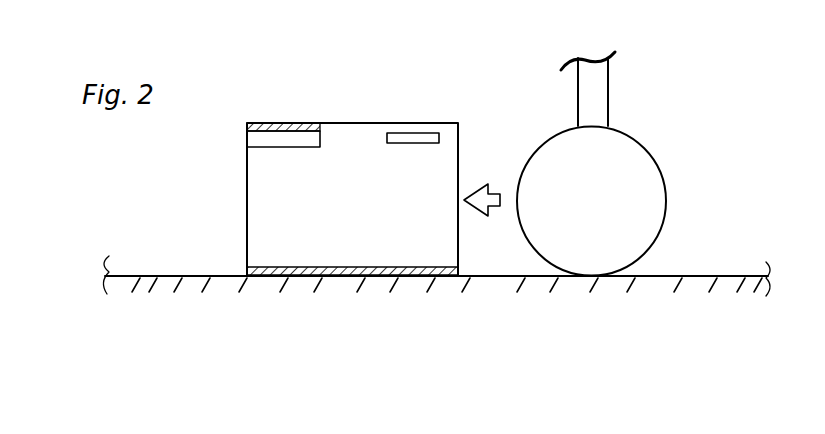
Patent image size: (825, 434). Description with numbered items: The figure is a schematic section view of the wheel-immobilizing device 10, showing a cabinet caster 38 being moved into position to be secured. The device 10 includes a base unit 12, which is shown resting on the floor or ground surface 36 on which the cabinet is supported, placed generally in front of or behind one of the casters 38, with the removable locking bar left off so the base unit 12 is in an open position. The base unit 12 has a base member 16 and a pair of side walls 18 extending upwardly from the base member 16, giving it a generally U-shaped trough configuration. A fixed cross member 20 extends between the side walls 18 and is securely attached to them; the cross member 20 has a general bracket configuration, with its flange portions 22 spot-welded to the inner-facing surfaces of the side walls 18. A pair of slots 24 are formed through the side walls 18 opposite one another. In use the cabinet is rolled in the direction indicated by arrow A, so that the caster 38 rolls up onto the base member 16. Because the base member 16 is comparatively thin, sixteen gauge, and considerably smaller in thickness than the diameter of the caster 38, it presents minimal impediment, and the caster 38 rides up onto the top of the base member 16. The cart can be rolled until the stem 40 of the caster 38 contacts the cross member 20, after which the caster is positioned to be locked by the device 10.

The wheel-immobilizing device 10 is at (293, 43).
The base unit 12 is at (393, 123).
The base member 16 is at (260, 268).
The side walls 18 is at (247, 203).
The fixed cross member 20 is at (303, 123).
The flange portions 22 is at (275, 140).
The slots 24 is at (396, 140).
The floor or ground surface 36 is at (738, 276).
The caster 38 is at (648, 181).
The stem 40 is at (598, 89).
The arrow A is at (485, 216).